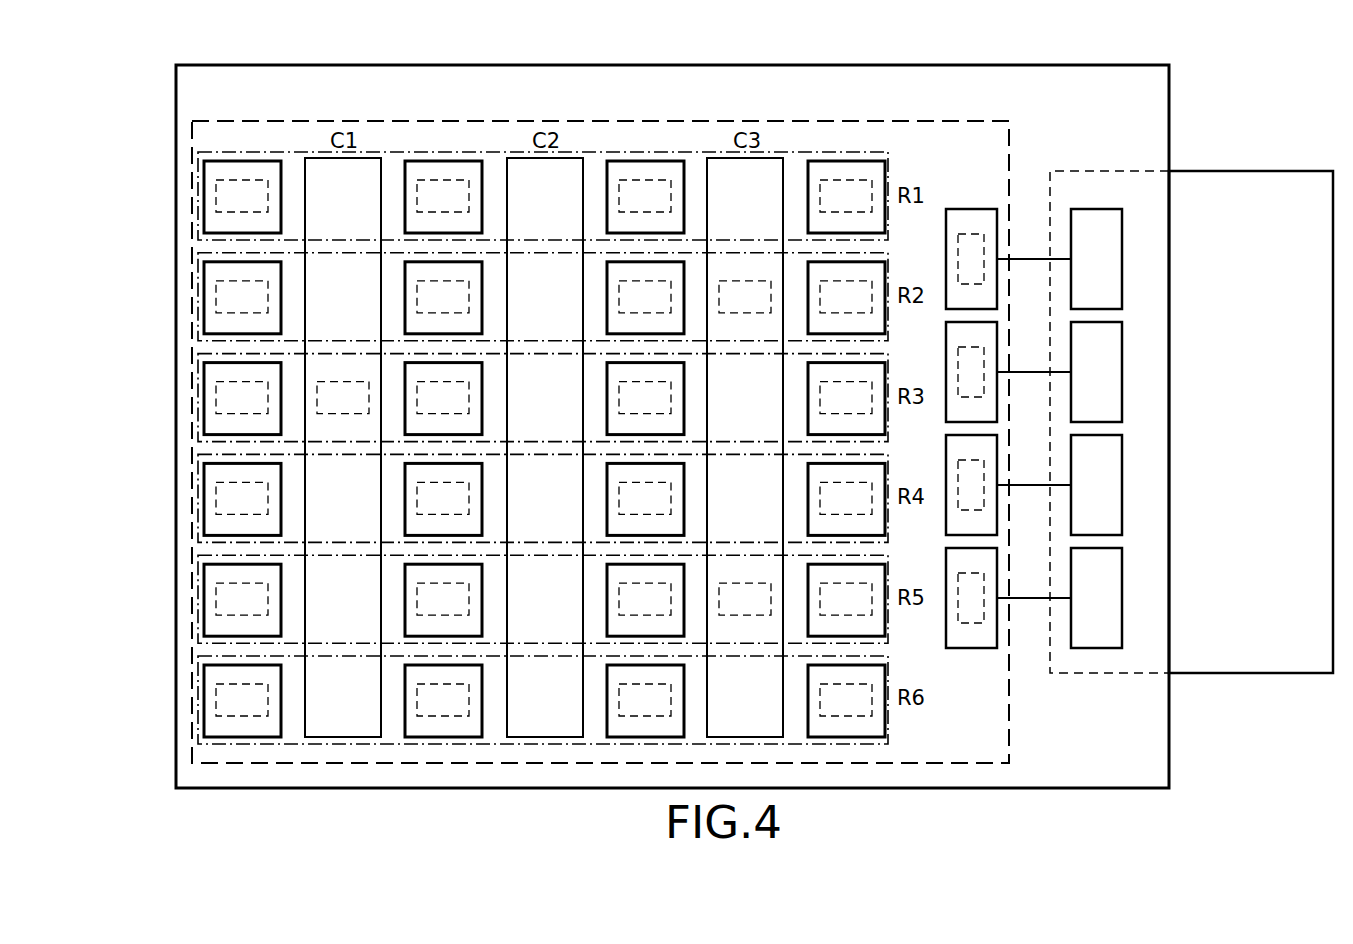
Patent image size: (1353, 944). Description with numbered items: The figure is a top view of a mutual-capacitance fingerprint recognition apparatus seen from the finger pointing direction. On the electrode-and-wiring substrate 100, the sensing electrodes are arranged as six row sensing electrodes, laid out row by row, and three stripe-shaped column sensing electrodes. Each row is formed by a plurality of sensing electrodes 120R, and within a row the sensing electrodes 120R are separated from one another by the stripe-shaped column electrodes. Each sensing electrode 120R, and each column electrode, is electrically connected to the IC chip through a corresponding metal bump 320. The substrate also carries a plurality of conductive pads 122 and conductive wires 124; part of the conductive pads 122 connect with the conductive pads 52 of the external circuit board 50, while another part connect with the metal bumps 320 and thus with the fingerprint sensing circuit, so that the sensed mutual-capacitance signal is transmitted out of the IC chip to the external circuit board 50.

The electrode-and-wiring substrate 100 is at (1143, 750).
The sensing electrode 120R is at (820, 168).
The metal bump 320 is at (742, 290).
The conductive pad 122 is at (970, 215).
The conductive wire 124 is at (1026, 258).
The conductive pad 52 is at (1095, 220).
The external circuit board 50 is at (1250, 195).